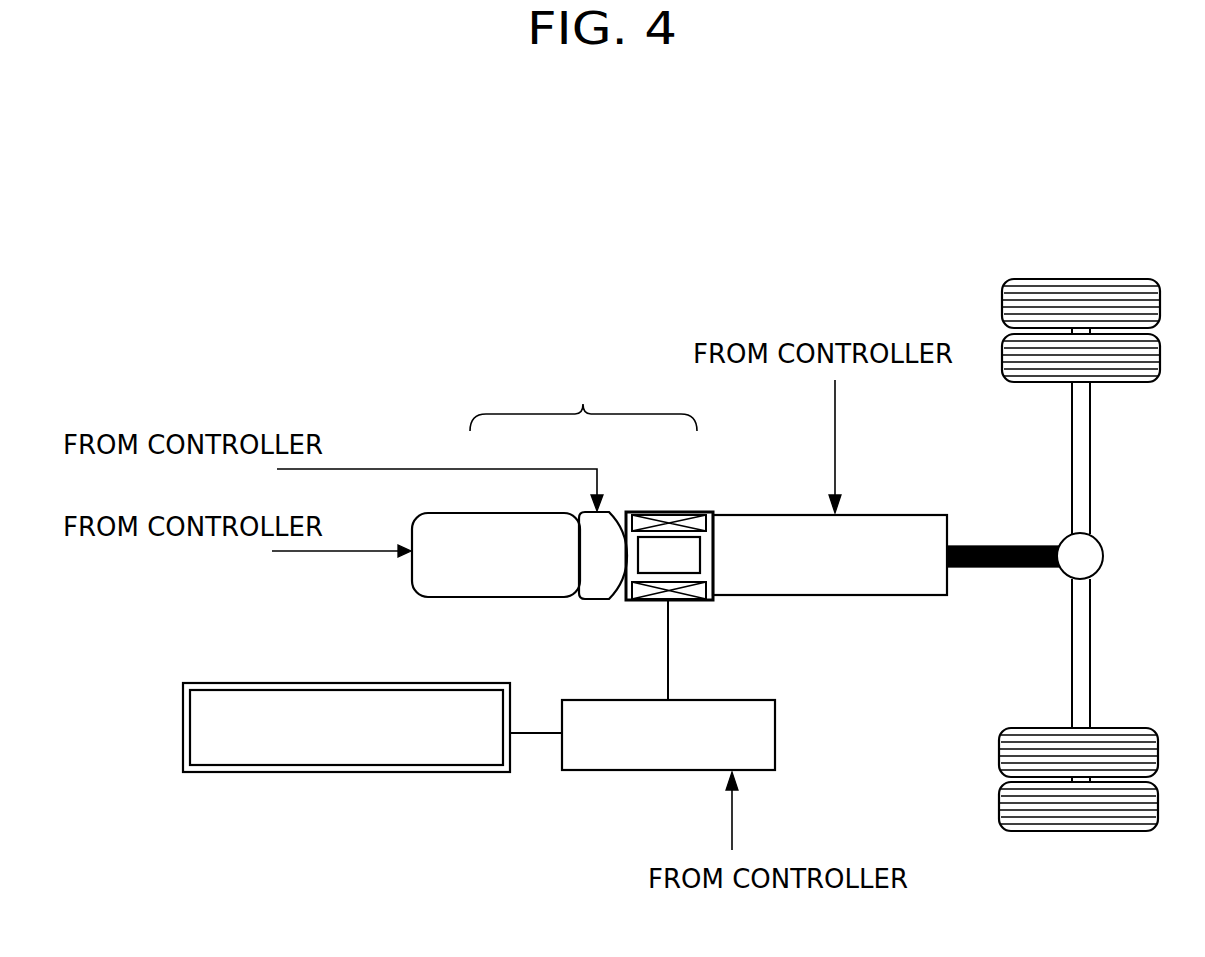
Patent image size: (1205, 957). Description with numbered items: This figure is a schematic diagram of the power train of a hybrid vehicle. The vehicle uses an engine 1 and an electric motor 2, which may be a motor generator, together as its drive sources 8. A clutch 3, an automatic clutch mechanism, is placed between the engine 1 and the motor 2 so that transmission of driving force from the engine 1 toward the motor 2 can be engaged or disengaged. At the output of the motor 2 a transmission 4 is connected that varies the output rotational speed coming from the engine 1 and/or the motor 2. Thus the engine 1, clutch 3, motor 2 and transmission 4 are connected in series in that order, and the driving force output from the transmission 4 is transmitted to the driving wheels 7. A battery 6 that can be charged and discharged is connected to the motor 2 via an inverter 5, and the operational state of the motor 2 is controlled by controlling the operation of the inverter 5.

The engine 1 is at (498, 513).
The electric motor 2 is at (670, 510).
The clutch 3 is at (605, 600).
The transmission 4 is at (792, 513).
The inverter 5 is at (669, 770).
The battery 6 is at (407, 772).
The driving wheels 7 is at (1084, 279).
The drive sources 8 is at (583, 404).